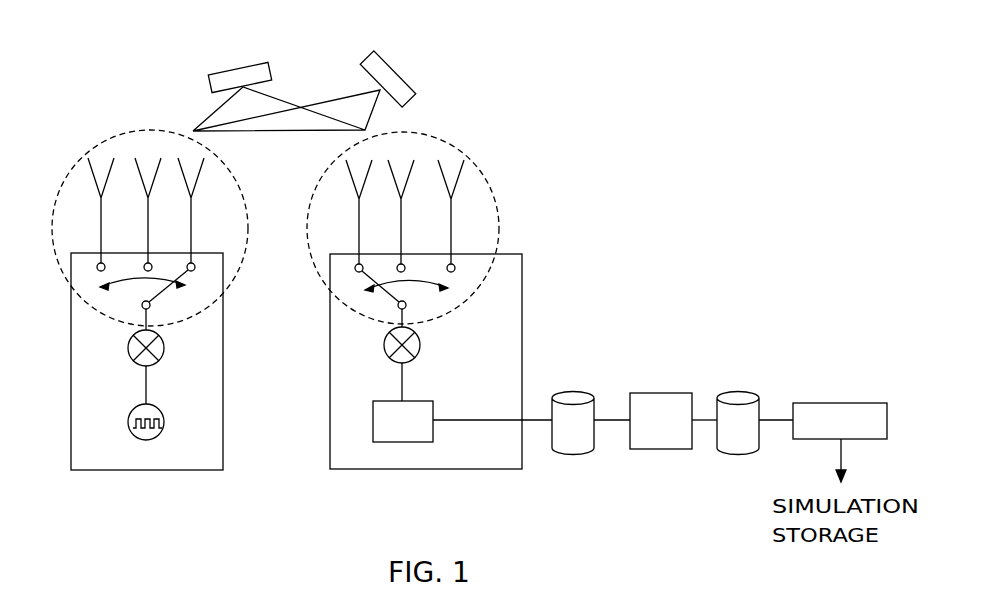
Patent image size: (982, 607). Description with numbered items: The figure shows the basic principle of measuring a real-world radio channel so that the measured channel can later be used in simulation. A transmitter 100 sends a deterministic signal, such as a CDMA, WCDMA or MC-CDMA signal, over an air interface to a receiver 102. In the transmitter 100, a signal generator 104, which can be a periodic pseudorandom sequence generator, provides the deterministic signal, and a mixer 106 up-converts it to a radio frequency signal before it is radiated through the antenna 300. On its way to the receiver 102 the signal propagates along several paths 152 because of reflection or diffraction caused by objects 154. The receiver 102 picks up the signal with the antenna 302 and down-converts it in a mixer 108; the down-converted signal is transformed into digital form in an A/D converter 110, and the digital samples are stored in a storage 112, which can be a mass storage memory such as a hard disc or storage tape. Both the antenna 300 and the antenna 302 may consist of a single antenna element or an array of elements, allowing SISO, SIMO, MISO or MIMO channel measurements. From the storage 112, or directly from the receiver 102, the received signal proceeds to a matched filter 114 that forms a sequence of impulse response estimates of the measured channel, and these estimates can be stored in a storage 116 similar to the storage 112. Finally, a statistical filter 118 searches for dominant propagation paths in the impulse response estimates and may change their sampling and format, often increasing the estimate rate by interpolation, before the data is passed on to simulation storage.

The transmitter 100 is at (71, 425).
The receiver 102 is at (330, 417).
The signal generator 104 is at (164, 424).
The mixer 106 is at (164, 350).
The mixer 108 is at (420, 345).
The A/D converter 110 is at (373, 413).
The storage 112 is at (573, 391).
The matched filter 114 is at (655, 393).
The storage 116 is at (738, 391).
The statistical filter 118 is at (835, 403).
The paths 152 is at (345, 97).
The objects 154 is at (245, 62).
The antenna 300 is at (105, 143).
The antenna 302 is at (430, 133).